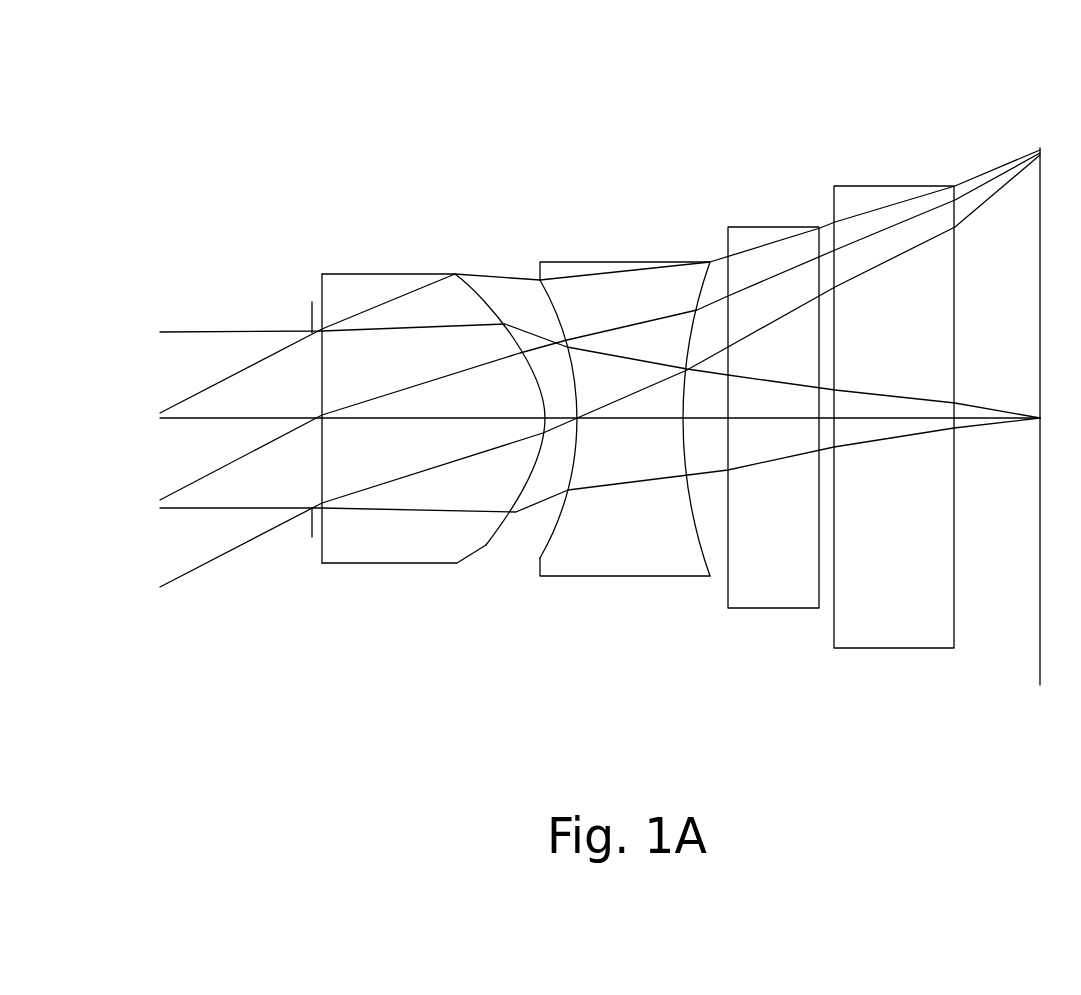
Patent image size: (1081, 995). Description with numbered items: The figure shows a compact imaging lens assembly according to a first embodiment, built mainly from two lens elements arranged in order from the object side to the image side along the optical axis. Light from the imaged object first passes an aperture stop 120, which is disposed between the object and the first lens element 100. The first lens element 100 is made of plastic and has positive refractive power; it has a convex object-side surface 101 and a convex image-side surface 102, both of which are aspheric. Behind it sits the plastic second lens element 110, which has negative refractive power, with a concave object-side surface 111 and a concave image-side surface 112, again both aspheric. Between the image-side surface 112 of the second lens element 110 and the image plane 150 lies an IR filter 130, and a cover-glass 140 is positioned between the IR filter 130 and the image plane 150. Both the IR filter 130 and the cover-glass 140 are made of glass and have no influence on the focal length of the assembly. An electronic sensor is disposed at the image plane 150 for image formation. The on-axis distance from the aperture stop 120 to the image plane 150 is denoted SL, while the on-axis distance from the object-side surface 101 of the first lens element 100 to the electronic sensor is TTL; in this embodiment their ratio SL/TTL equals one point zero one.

The first lens element 100 is at (368, 397).
The object-side surface of the first lens element 101 is at (317, 437).
The image-side surface of the first lens element 102 is at (538, 448).
The second lens element 110 is at (601, 397).
The object-side surface of the second lens element 111 is at (575, 447).
The image-side surface of the second lens element 112 is at (678, 448).
The aperture stop 120 is at (308, 312).
The IR filter 130 is at (775, 288).
The cover-glass 140 is at (897, 242).
The image plane 150 is at (1040, 200).